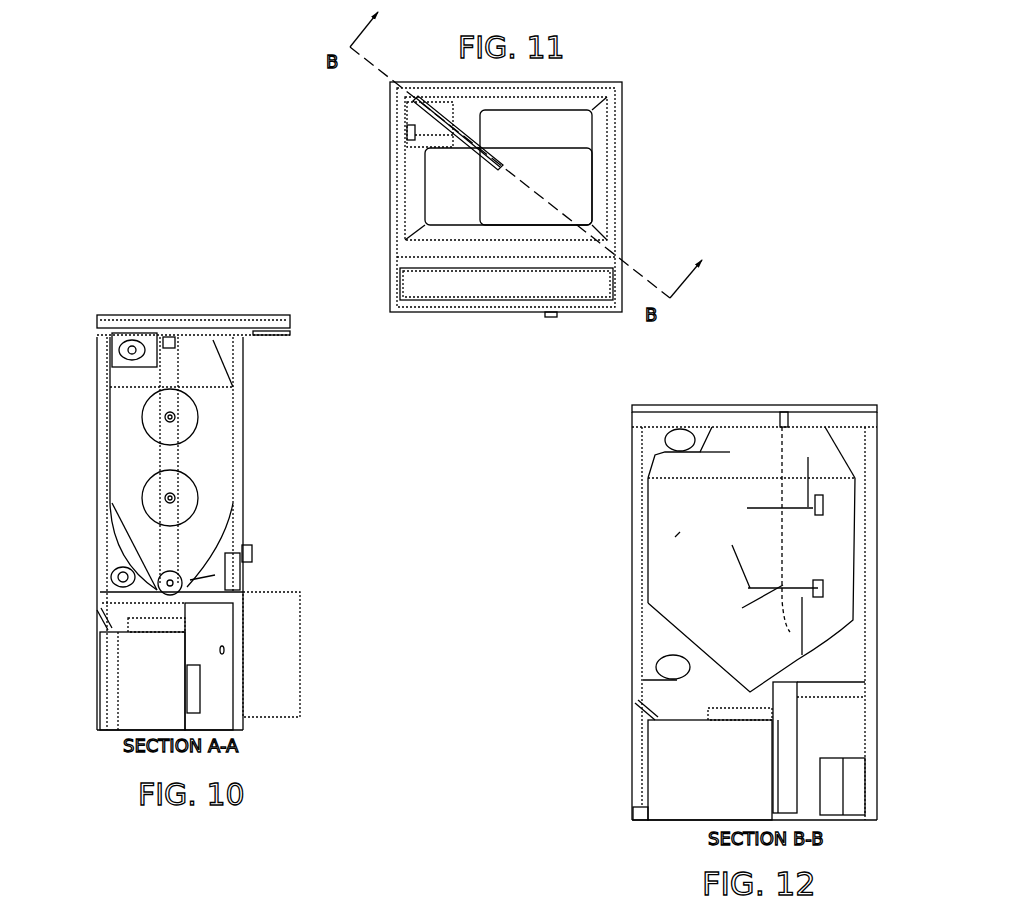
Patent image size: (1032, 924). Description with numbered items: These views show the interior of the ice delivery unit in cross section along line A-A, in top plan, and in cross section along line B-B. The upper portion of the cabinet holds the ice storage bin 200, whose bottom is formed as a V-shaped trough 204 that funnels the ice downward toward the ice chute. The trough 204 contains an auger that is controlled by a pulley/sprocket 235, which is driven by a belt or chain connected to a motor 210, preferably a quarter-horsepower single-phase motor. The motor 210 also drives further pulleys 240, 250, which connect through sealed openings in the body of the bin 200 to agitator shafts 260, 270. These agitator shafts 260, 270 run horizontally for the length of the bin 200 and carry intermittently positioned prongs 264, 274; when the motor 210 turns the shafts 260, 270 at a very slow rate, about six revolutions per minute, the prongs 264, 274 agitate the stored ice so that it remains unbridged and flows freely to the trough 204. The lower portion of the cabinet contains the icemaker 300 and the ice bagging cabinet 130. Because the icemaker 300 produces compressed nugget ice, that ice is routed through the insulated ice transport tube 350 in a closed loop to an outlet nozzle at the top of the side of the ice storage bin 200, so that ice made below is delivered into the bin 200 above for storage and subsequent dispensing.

In FIG. 10, the ice bagging cabinet 130 is at (233, 673).
In FIG. 10, the ice storage bin 200 is at (223, 450).
In FIG. 10, the V-shaped trough 204 is at (128, 558).
In FIG. 10, the motor 210 is at (130, 350).
In FIG. 12, the motor 210 is at (678, 438).
In FIG. 10, the pulley/sprocket 235 is at (192, 582).
In FIG. 10, the pulley 240 is at (187, 498).
In FIG. 10, the pulley 250 is at (147, 415).
In FIG. 12, the agitator shaft 260 is at (844, 581).
In FIG. 12, the prongs 264 is at (733, 560).
In FIG. 12, the agitator shaft 270 is at (817, 499).
In FIG. 12, the prongs 274 is at (812, 470).
In FIG. 10, the icemaker 300 is at (109, 710).
In FIG. 10, the ice transport tube 350 is at (55, 638).
In FIG. 12, the ice transport tube 350 is at (575, 722).